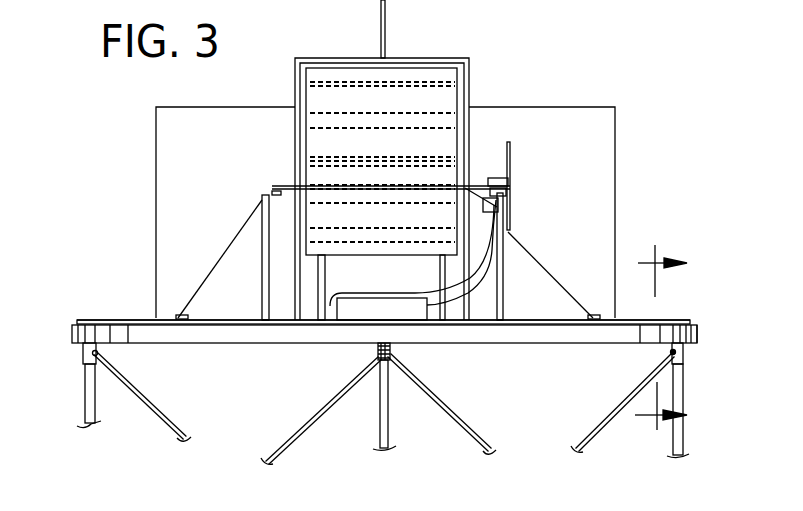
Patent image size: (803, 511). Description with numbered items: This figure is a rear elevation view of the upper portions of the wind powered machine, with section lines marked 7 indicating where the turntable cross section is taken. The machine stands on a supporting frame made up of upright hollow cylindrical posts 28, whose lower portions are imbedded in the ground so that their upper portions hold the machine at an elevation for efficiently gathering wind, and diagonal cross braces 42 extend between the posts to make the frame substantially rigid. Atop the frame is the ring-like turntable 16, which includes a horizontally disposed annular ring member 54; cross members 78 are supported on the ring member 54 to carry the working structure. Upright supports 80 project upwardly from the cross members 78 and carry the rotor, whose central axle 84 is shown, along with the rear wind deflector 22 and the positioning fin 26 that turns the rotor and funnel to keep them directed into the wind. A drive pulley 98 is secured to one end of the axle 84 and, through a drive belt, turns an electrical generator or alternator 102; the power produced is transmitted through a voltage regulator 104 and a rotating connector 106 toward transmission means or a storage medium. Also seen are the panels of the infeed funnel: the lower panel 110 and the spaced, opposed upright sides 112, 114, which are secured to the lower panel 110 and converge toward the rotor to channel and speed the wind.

The section line 7- 7 is at (661, 341).
The turntable 16 is at (630, 336).
The rear wind deflector 22 is at (336, 100).
The positioning fin 26 is at (386, 8).
The upright hollow cylindrical posts 28 is at (378, 430).
The diagonal cross braces 42 is at (473, 426).
The ring member 54 is at (699, 333).
The cross members 78 is at (110, 320).
The upright supports 80 is at (293, 297).
The central axle 84 is at (265, 192).
The drive pulley 98 is at (512, 172).
The electrical generator, or alternator 102 is at (505, 175).
The voltage regulator 104 is at (495, 207).
The rotating connector 106 is at (389, 315).
The lower panel 110 is at (230, 300).
The upright side 112 is at (598, 137).
The upright side 114 is at (177, 139).